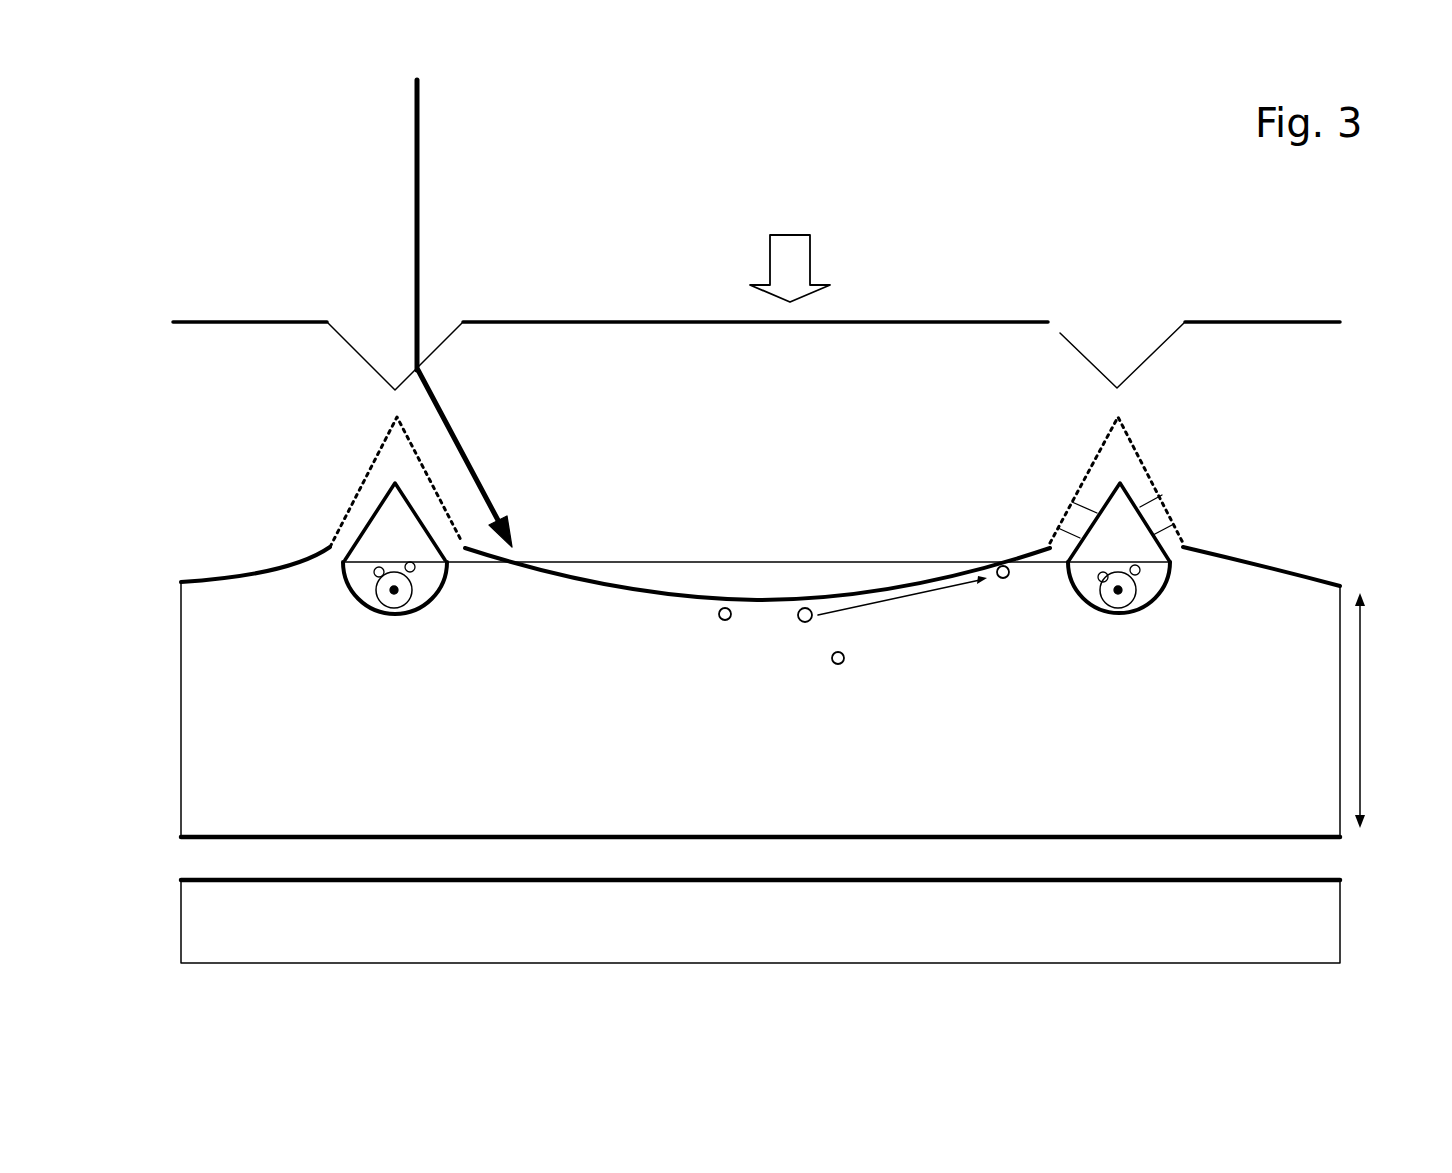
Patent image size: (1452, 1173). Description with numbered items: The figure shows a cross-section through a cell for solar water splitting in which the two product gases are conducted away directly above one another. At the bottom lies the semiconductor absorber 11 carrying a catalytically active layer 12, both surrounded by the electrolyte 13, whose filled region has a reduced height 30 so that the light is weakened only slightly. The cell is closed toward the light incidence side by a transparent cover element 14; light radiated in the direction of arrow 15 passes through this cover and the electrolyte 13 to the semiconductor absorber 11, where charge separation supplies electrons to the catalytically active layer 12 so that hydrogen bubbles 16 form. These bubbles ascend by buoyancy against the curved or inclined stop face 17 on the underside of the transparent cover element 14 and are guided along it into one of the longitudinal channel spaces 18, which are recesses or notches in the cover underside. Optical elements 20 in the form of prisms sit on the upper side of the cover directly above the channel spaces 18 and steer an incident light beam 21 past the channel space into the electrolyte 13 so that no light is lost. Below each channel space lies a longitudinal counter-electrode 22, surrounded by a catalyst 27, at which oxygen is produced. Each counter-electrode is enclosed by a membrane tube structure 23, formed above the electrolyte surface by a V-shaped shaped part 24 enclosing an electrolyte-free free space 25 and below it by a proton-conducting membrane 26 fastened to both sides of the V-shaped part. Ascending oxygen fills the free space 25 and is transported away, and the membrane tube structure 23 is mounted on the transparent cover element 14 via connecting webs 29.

The semiconductor absorber 11 is at (202, 937).
The catalytically active layer 12 is at (197, 862).
The electrolyte 13 is at (213, 722).
The transparent cover element 14 is at (610, 340).
The arrow 15 is at (803, 260).
The hydrogen bubbles 16 is at (805, 622).
The stop face 17 is at (240, 573).
The channel spaces 18 is at (390, 455).
The optical elements 20 is at (340, 328).
The light beam 21 is at (420, 138).
The counter-electrodes 22 is at (394, 590).
The membrane tube structure 23 is at (343, 609).
The V-shaped shaped part 24 is at (413, 513).
The free space 25 is at (1118, 512).
The proton-conducting membrane 26 is at (447, 593).
The catalyst 27 is at (387, 623).
The connecting webs 29 is at (1066, 518).
The height 30 is at (1362, 700).